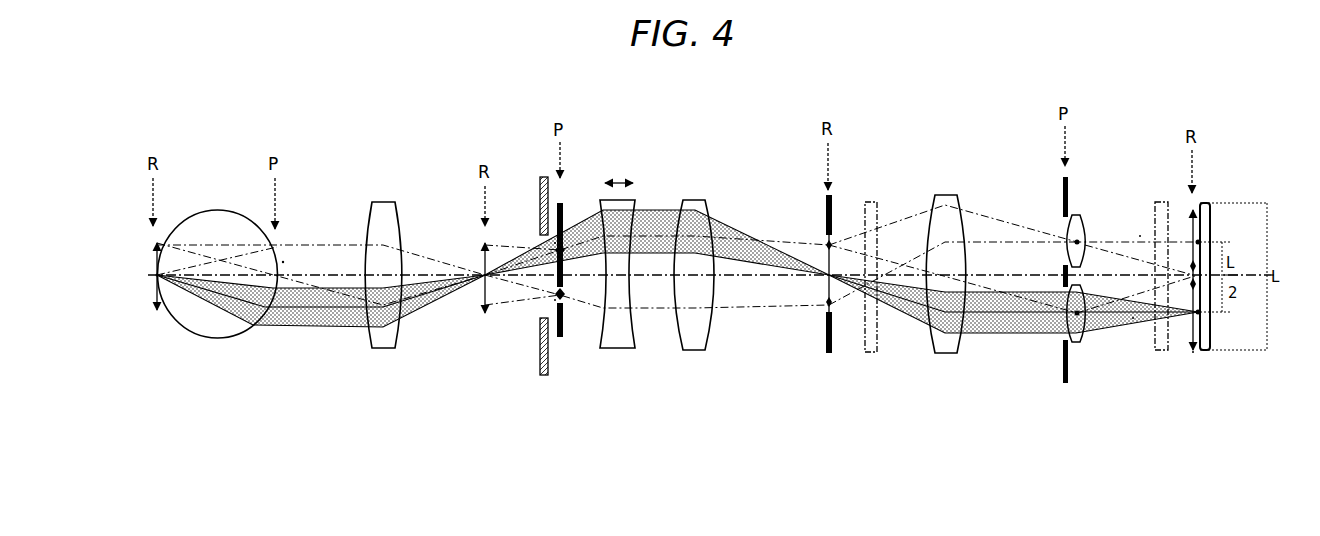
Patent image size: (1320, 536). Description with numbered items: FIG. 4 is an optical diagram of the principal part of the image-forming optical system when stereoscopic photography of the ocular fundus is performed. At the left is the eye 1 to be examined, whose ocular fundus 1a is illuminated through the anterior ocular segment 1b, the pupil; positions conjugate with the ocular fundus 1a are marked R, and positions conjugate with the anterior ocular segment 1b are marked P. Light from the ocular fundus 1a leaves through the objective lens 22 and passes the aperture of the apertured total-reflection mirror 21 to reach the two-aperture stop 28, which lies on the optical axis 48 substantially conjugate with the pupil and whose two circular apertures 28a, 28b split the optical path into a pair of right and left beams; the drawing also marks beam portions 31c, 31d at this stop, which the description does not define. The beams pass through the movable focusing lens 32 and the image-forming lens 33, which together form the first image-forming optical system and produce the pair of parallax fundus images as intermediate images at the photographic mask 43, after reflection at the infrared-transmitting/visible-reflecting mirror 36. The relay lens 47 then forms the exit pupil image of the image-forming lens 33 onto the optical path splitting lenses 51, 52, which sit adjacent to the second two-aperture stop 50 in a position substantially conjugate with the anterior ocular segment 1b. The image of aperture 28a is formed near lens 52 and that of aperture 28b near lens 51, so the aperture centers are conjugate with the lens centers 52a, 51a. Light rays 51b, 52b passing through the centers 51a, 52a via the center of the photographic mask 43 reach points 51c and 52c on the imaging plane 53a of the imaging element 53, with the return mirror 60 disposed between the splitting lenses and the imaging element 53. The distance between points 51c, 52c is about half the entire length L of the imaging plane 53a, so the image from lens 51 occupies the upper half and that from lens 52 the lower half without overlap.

The eye to be examined 1 is at (217, 210).
The ocular fundus 1a is at (157, 278).
The anterior ocular segment 1b is at (283, 262).
The apertured total-reflection mirror 21 is at (540, 180).
The objective lens 22 is at (385, 200).
The two-aperture stop 28 is at (559, 340).
The aperture 28a is at (566, 243).
The aperture 28b is at (567, 300).
The beam portion 31c is at (553, 243).
The beam portion 31d is at (553, 300).
The focusing lens 32 is at (620, 350).
The image-forming lens 33 is at (697, 200).
The infrared-transmitting/visible-reflecting mirror 36 is at (870, 200).
The photographic mask 43 is at (829, 355).
The relay lens 47 is at (950, 195).
The optical axis 48 is at (440, 275).
The two-aperture stop 50 is at (1065, 383).
The optical path splitting lens 51 is at (1080, 216).
The lens center 51a is at (1080, 241).
The light ray 51b is at (1140, 235).
The reached point 51c is at (1200, 242).
The optical path splitting lens 52 is at (1078, 345).
The lens center 52a is at (1080, 314).
The light ray 52b is at (1133, 320).
The reached point 52c is at (1200, 312).
The imaging element 53 is at (1204, 352).
The imaging plane 53a is at (1193, 355).
The return mirror 60 is at (1160, 202).